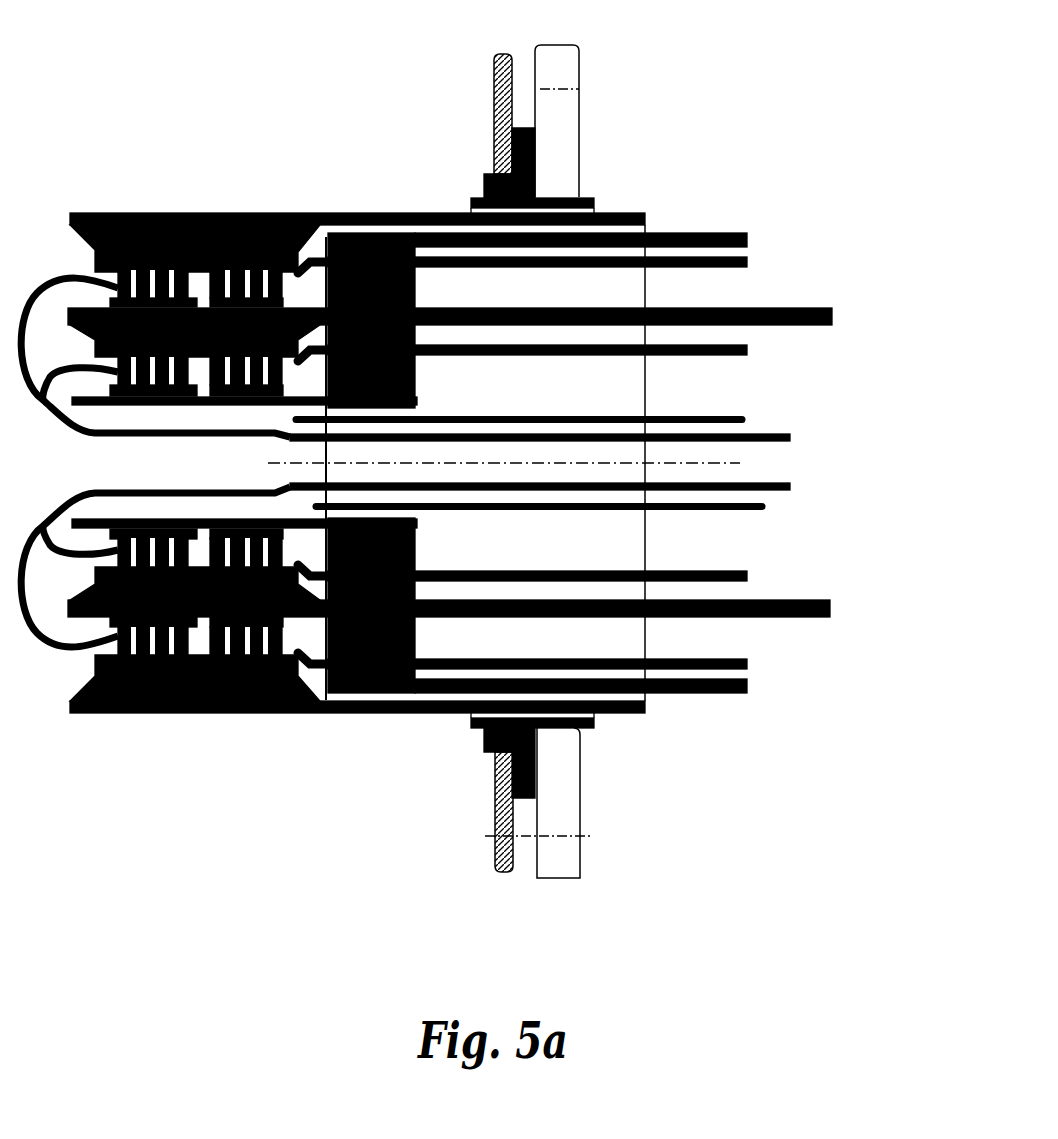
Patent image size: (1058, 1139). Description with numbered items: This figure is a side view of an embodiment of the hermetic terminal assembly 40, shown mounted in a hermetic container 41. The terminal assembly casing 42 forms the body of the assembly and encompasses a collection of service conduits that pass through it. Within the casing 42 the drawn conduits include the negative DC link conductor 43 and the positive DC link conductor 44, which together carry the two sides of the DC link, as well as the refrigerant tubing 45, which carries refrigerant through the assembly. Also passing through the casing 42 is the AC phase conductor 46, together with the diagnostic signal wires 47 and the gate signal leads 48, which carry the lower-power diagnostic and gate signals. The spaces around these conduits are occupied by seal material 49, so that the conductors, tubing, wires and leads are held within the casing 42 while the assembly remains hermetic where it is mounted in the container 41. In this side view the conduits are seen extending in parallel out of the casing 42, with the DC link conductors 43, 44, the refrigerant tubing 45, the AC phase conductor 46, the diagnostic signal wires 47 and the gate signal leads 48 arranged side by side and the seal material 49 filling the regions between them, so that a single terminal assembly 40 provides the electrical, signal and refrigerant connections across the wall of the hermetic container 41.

The hermetic terminal assembly 40 is at (380, 163).
The hermetic container 41 is at (557, 109).
The terminal assembly casing 42 is at (583, 197).
The negative DC link conductor 43 is at (637, 213).
The positive DC link conductor 44 is at (747, 234).
The refrigerant tubing 45 is at (747, 262).
The AC phase conductor 46 is at (832, 313).
The diagnostic signal wires 47 is at (745, 416).
The gate signal leads 48 is at (790, 437).
The seal material 49 is at (488, 300).